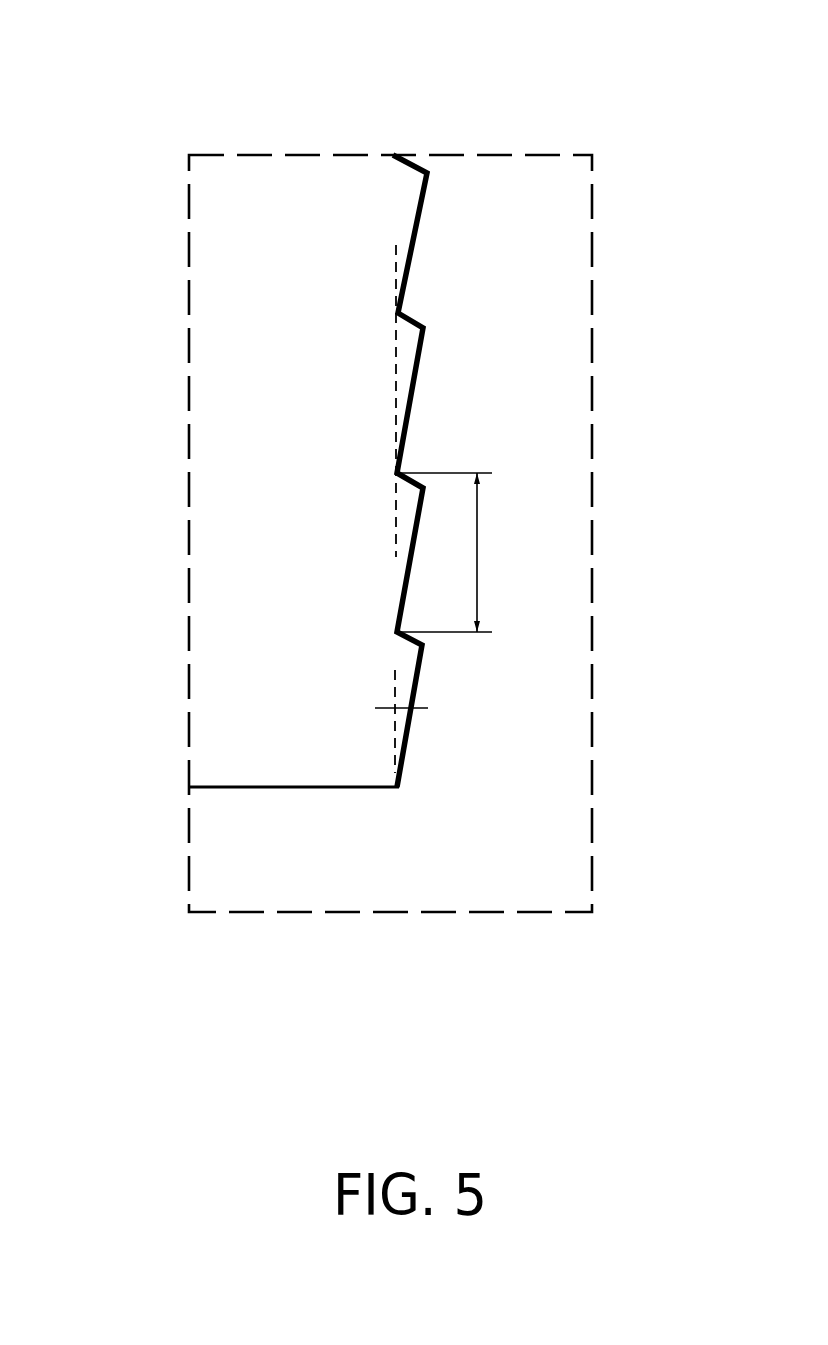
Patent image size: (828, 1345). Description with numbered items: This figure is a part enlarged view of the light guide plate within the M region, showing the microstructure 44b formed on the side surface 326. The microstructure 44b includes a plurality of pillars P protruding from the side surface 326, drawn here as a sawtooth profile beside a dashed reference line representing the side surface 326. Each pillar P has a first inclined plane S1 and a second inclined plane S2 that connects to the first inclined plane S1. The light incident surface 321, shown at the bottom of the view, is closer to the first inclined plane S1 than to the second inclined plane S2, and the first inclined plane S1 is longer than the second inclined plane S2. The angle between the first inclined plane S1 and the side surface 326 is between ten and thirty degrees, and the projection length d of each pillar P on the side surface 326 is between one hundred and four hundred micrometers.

The M region M is at (716, 32).
The microstructure 44b is at (420, 673).
The light incident surface 321 is at (258, 787).
The side surface 326 is at (397, 373).
The first inclined plane S1 is at (415, 392).
The second inclined plane S2 is at (413, 323).
The pillar P is at (548, 320).
The projection length d is at (444, 552).